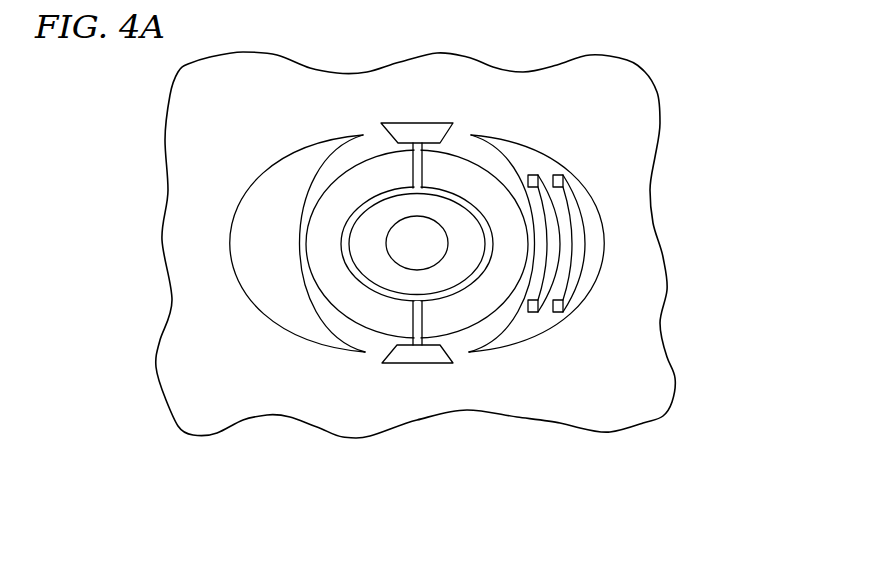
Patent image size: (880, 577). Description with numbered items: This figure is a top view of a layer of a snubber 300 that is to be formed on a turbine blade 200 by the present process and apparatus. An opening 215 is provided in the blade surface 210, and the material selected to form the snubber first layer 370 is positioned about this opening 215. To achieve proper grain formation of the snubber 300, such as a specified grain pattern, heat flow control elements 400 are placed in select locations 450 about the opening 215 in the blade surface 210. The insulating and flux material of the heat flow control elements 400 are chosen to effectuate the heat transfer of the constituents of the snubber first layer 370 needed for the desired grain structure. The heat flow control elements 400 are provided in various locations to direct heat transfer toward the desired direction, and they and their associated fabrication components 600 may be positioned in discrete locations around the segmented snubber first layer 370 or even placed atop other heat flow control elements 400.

The turbine blade 200 is at (623, 98).
The blade surface 210 is at (264, 107).
The opening 215 is at (437, 262).
The snubber 300 is at (318, 187).
The snubber first layer 370 is at (457, 155).
The heat flow control elements 400 is at (469, 245).
The select locations 450 is at (314, 151).
The fabrication components 600 is at (603, 287).